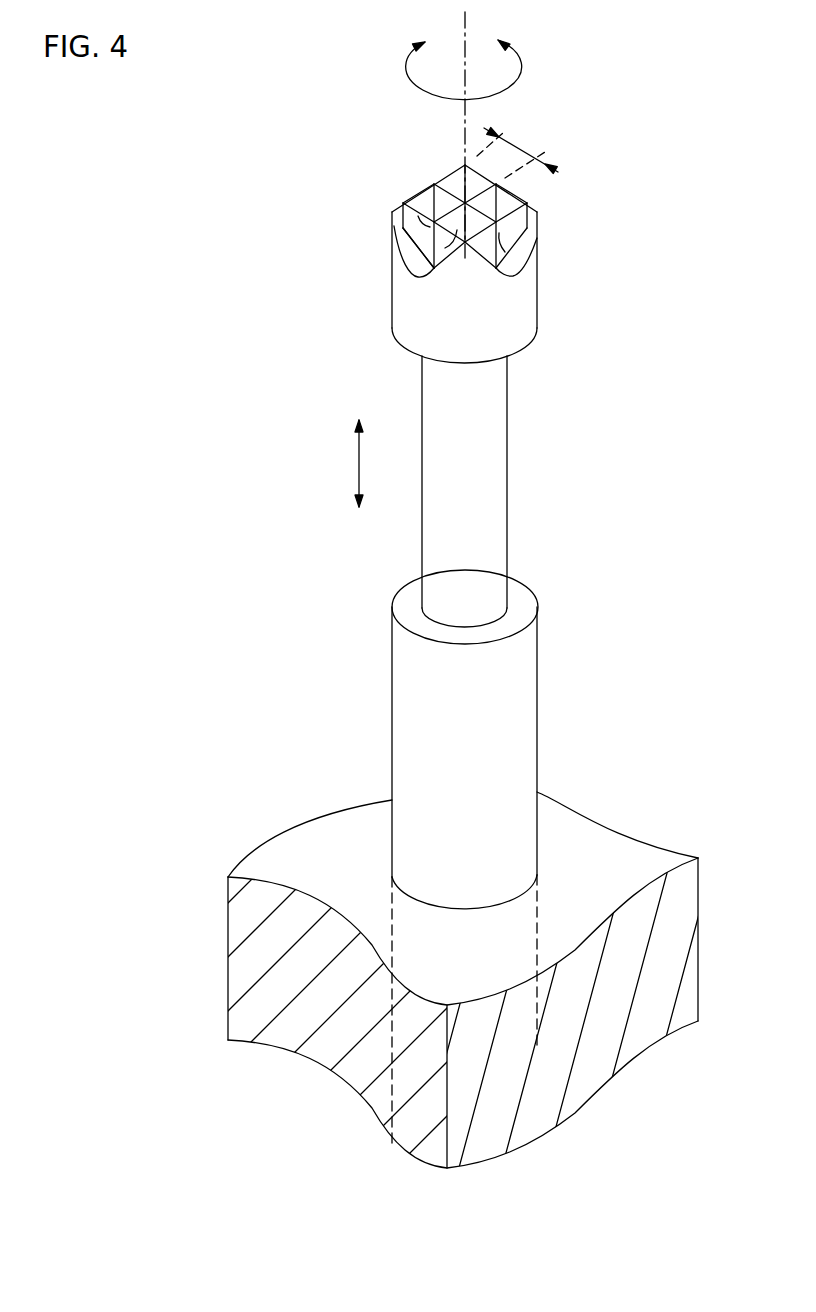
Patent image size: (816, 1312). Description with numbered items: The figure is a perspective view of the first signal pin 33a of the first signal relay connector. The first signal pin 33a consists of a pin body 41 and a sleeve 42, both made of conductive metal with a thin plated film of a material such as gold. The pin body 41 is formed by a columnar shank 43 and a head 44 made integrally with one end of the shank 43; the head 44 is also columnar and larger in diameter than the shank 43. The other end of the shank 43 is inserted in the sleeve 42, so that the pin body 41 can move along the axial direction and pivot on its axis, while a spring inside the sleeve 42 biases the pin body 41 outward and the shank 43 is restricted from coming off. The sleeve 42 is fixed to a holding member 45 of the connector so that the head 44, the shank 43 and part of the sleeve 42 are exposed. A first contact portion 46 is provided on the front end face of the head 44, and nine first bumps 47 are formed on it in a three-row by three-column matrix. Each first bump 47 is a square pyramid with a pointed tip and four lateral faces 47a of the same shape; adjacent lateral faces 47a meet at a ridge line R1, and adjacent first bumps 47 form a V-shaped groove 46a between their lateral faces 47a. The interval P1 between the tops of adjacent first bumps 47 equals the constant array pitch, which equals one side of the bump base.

The first signal pin 33a is at (472, 927).
The pin body 41 is at (487, 374).
The sleeve 42 is at (537, 740).
The shank 43 is at (497, 483).
The head 44 is at (527, 296).
The holding member 45 is at (628, 837).
The first contact portion 46 is at (384, 207).
The V-shaped groove 46a is at (487, 251).
The first bump 47 is at (527, 222).
The lateral face 47a is at (430, 200).
The ridge line R1 is at (507, 192).
The interval between adjacent first bumps P1 is at (517, 150).